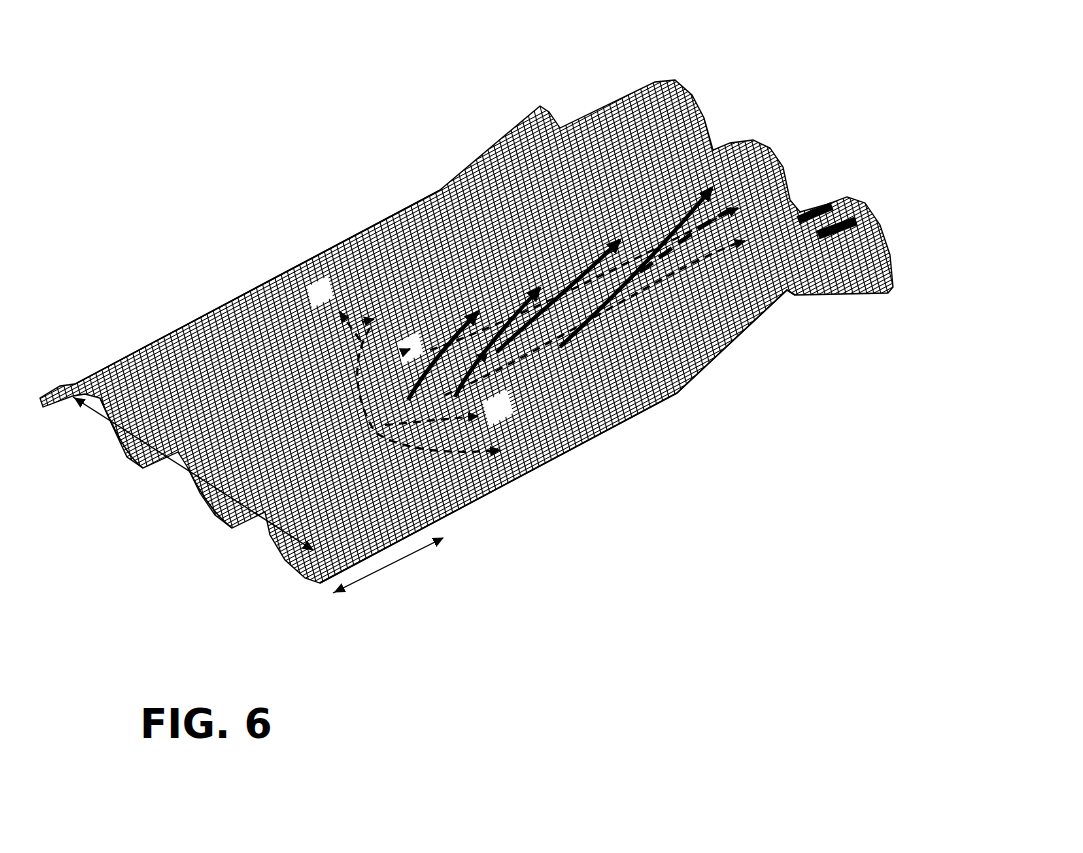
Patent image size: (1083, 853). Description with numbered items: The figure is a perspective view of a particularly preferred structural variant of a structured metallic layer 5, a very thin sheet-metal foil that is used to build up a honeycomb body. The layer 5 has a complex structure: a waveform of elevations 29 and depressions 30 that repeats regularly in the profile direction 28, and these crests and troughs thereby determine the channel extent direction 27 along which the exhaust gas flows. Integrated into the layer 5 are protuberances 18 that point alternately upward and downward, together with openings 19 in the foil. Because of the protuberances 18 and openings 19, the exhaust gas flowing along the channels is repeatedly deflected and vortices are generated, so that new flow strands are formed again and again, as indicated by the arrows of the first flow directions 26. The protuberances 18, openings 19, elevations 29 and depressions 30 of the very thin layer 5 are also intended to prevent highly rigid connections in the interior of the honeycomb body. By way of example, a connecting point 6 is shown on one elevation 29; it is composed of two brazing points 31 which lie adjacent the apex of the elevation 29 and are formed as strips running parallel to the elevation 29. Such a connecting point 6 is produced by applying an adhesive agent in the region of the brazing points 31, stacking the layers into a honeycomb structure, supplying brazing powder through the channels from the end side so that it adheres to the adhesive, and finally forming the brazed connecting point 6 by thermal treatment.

The structured layer 5 is at (643, 413).
The connecting point 6 is at (790, 140).
The protuberance 18 is at (757, 323).
The opening 19 is at (312, 286).
The first flow direction 26 is at (490, 456).
The channel extent direction 27 is at (383, 574).
The profile direction 28 is at (268, 530).
The elevation 29 is at (125, 362).
The depression 30 is at (140, 470).
The brazing point 31 is at (830, 205).